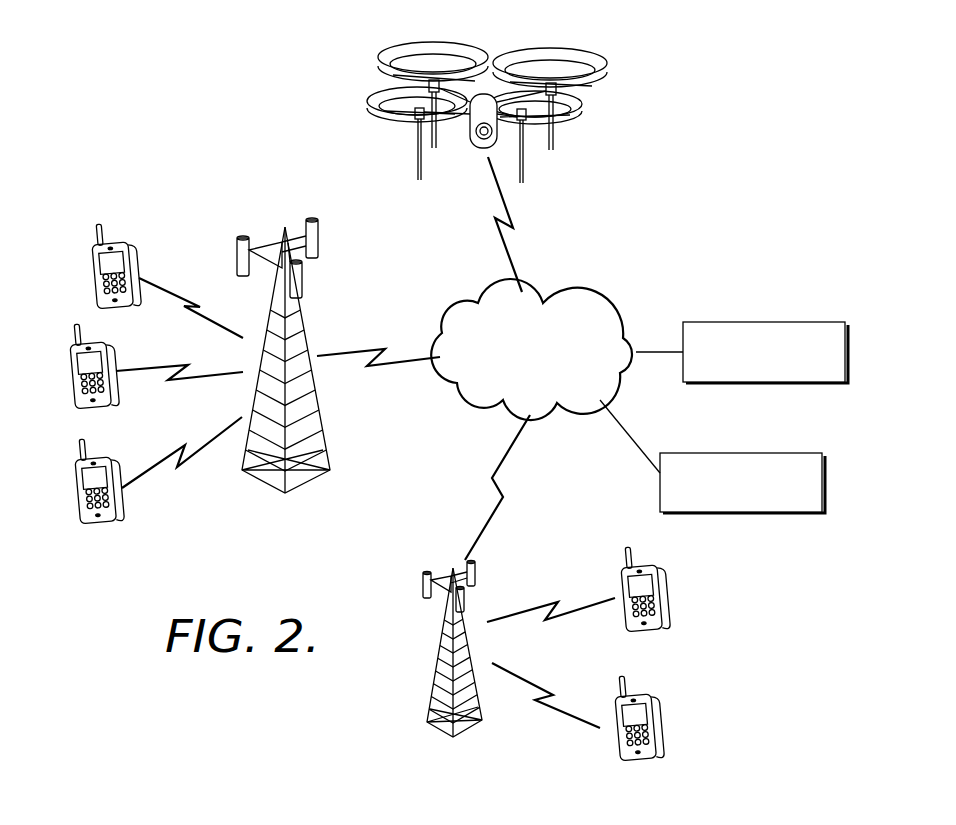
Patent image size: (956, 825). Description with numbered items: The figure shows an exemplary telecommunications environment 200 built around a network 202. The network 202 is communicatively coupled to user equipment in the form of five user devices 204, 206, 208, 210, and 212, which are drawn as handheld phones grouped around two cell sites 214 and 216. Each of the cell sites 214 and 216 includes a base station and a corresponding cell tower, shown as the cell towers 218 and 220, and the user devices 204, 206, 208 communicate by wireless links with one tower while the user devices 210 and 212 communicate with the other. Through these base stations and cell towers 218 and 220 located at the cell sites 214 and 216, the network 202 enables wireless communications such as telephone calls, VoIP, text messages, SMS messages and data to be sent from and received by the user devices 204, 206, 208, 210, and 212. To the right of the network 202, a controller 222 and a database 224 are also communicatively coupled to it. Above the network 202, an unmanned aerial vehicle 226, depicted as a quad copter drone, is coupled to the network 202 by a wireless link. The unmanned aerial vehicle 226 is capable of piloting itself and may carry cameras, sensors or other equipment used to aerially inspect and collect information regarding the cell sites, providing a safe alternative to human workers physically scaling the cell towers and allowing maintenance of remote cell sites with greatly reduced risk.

The telecommunications environment 200 is at (177, 96).
The network 202 is at (583, 293).
The user device 204 is at (90, 269).
The user device 206 is at (68, 372).
The user device 208 is at (74, 493).
The user device 210 is at (668, 605).
The user device 212 is at (660, 735).
The cell site 214 is at (450, 738).
The cell site 216 is at (290, 498).
The cell tower 218 is at (346, 460).
The cell tower 220 is at (432, 692).
The controller 222 is at (765, 322).
The database 224 is at (742, 453).
The unmanned aerial vehicle 226 is at (557, 47).